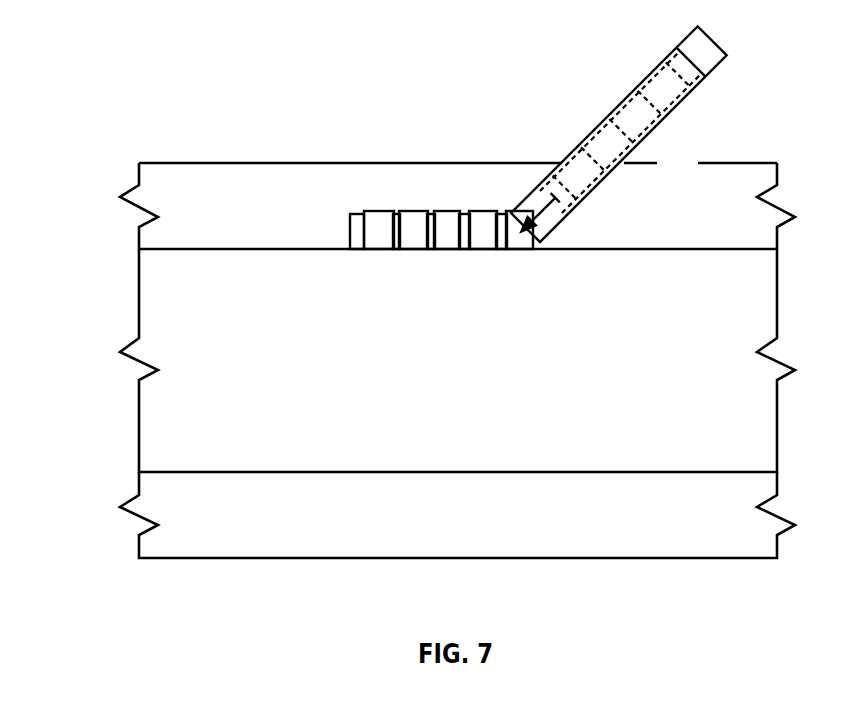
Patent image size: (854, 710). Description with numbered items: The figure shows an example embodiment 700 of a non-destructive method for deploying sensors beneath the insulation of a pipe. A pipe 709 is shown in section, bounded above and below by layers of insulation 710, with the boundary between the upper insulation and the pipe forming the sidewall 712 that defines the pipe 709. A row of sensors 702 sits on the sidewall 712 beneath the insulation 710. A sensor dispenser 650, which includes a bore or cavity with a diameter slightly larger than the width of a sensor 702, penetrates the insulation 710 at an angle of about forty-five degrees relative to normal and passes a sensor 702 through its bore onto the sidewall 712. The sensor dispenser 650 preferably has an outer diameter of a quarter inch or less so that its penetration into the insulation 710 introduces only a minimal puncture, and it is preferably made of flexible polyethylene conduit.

The example embodiment 700 is at (134, 67).
The sensor 702 is at (378, 186).
The pipe 709 is at (483, 374).
The insulation 710 is at (315, 216).
The sidewall 712 is at (660, 236).
The sensor dispenser 650 is at (683, 41).